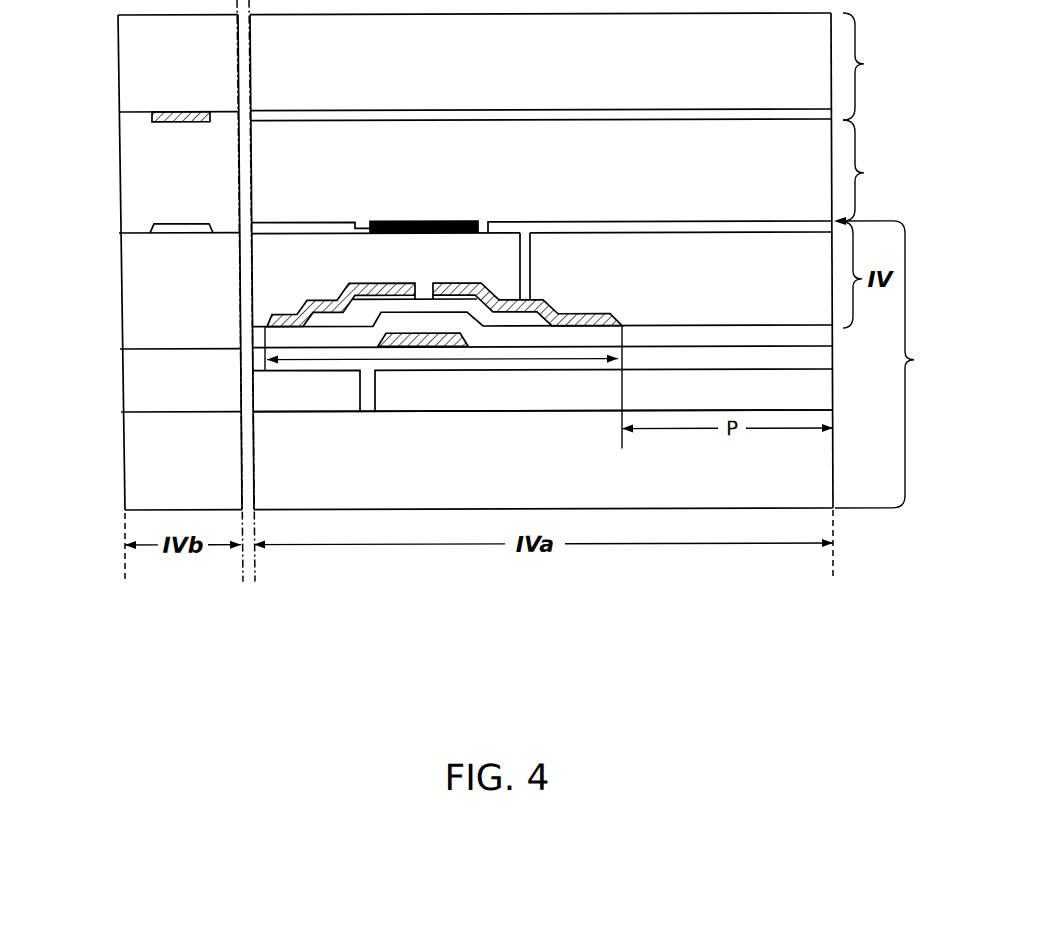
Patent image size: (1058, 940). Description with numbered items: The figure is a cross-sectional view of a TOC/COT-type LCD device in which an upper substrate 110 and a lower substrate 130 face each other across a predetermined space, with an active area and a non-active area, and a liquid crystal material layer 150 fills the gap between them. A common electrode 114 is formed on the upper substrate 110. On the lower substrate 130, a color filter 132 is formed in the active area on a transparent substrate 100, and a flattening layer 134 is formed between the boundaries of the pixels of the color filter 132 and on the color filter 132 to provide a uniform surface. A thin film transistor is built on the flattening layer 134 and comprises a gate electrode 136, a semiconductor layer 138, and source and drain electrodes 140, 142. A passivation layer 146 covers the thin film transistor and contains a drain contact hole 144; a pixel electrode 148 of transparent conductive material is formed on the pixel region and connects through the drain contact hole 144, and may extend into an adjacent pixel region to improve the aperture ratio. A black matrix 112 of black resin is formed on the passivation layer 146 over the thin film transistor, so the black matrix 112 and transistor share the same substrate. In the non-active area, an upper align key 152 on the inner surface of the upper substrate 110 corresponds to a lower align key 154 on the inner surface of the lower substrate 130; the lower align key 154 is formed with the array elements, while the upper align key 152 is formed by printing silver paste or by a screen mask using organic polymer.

The transparent substrate 100 is at (555, 67).
The upper substrate 110 is at (873, 66).
The black matrix 112 is at (432, 222).
The common electrode 114 is at (643, 122).
The lower substrate 130 is at (893, 362).
The color filter 132 is at (290, 413).
The flattening layer 134 is at (130, 380).
The gate electrode 136 is at (429, 366).
The semiconductor layer 138 is at (330, 322).
The source electrode 140 is at (384, 290).
The drain electrode 142 is at (478, 284).
The drain contact hole 144 is at (526, 212).
The passivation layer 146 is at (358, 240).
The pixel electrode 148 is at (298, 228).
The liquid crystal material layer 150 is at (873, 170).
The upper align key 152 is at (177, 123).
The lower align key 154 is at (183, 234).